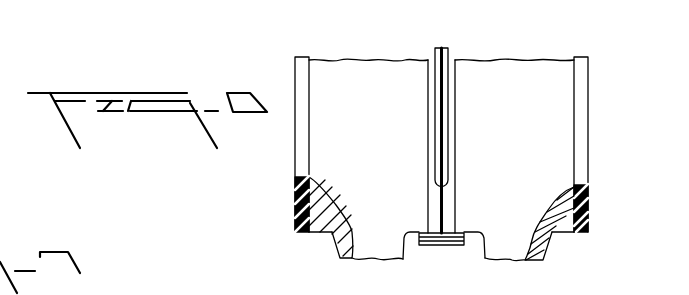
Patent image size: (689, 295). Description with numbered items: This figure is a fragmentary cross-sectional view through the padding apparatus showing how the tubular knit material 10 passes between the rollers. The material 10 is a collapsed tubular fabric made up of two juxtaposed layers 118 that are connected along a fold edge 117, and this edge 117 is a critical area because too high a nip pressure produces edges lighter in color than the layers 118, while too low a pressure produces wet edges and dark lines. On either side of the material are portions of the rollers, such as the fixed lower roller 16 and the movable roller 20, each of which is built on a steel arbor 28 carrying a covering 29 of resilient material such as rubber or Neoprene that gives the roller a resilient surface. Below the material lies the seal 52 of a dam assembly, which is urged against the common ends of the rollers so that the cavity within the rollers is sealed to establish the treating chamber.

The material 10 is at (447, 47).
The lower roller 16 is at (302, 232).
The movable roller 20 is at (580, 232).
The steel arbor 28 is at (350, 72).
The covering 29 is at (297, 60).
The seal 52 is at (442, 245).
The edge 117 is at (442, 185).
The layers 118 is at (433, 115).